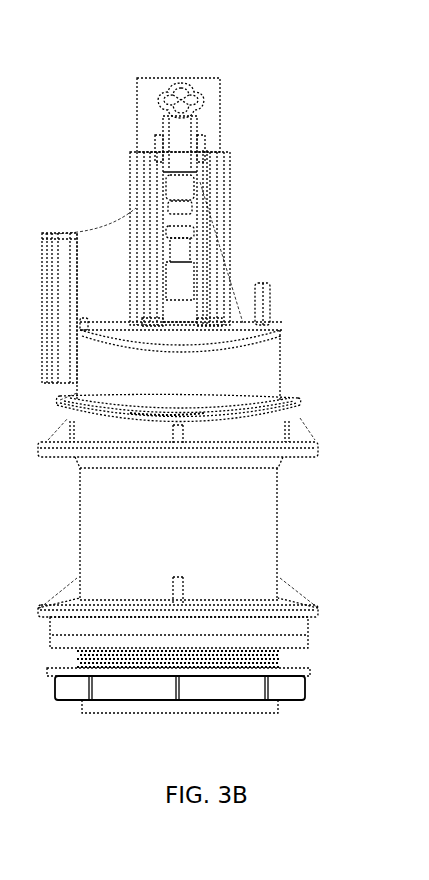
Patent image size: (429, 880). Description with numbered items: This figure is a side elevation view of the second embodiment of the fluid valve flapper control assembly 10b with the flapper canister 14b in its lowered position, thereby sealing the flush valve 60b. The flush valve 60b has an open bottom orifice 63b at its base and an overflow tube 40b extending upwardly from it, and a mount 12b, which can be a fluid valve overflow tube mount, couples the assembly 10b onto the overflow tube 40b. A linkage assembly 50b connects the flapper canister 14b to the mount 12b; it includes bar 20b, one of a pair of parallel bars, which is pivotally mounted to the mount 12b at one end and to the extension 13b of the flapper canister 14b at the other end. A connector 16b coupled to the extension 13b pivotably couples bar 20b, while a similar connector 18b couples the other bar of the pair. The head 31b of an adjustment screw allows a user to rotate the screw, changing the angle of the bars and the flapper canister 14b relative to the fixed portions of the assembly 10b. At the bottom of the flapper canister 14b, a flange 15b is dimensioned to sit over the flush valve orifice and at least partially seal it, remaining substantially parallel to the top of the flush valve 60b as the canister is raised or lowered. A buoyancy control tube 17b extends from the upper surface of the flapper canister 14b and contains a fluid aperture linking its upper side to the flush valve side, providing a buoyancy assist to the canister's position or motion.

The fluid valve flapper control assembly 10b is at (263, 78).
The mount 12b is at (193, 87).
The extension 13b is at (203, 253).
The flapper canister 14b is at (275, 327).
The flange 15b is at (302, 397).
The connector 16b is at (175, 218).
The buoyancy control tube 17b is at (263, 296).
The connector 18b is at (187, 279).
The bar 20b is at (202, 185).
The head 31b is at (200, 113).
The overflow tube 40b is at (148, 98).
The linkage assembly 50b is at (253, 182).
The flush valve 60b is at (285, 552).
The bottom orifice 63b is at (278, 717).